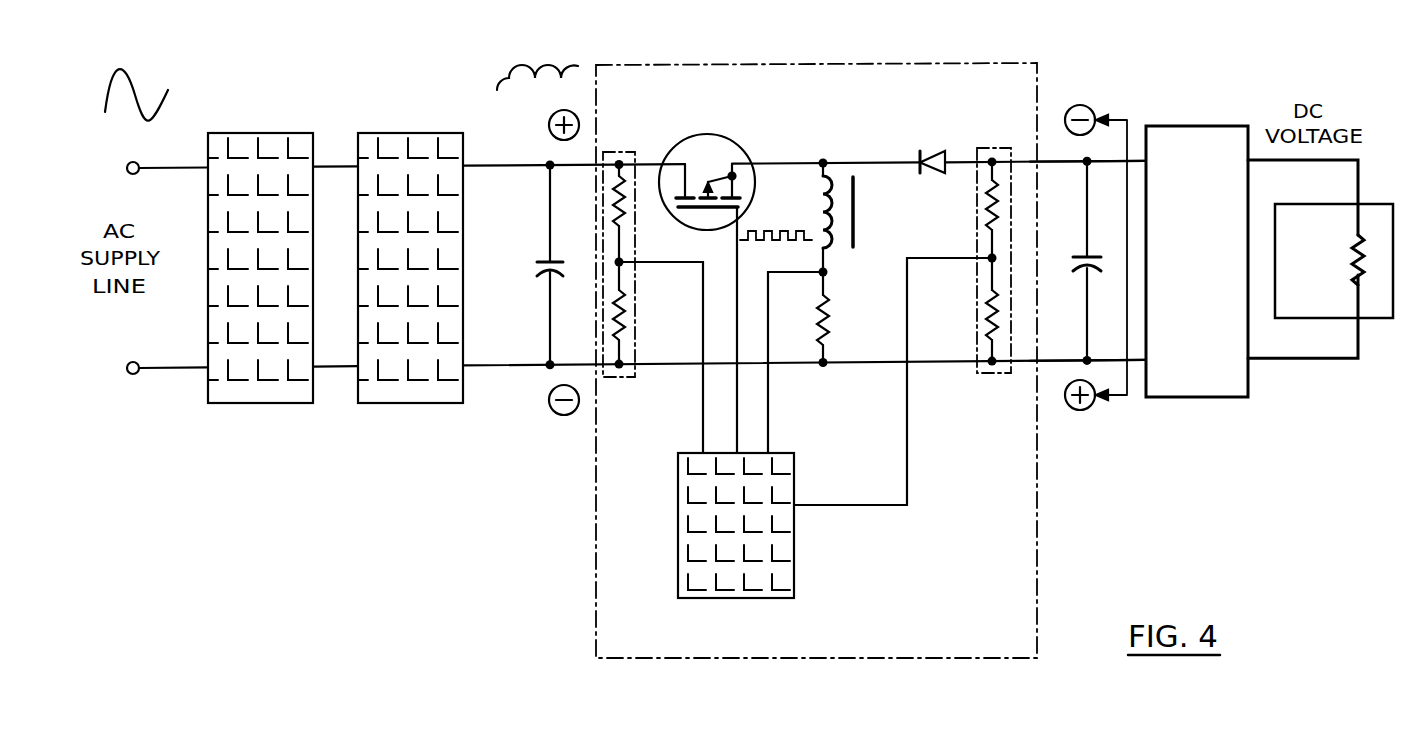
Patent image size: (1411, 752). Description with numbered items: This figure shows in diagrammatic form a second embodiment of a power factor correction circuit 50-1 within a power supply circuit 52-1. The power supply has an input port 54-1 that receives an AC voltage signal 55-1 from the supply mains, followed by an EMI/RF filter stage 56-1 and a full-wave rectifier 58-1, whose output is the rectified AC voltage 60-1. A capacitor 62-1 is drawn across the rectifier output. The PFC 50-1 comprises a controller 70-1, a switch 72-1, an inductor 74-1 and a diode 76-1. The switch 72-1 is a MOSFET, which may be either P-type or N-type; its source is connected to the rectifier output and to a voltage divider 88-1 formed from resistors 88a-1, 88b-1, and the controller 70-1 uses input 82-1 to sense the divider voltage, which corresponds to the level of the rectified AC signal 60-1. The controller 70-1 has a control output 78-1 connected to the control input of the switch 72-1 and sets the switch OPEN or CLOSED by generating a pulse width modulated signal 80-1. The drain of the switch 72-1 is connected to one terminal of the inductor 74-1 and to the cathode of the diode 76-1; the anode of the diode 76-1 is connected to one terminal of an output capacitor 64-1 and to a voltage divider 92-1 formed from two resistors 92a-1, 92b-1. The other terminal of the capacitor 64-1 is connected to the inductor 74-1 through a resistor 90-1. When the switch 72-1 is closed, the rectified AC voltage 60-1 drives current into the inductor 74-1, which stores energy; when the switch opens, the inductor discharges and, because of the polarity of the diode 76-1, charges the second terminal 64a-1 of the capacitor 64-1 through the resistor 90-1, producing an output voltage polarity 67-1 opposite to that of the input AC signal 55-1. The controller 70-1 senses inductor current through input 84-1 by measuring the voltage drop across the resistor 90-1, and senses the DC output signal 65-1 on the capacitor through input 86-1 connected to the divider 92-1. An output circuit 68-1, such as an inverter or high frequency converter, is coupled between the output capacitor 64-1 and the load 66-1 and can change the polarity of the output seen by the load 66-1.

The power factor correction circuit 50-1 is at (838, 63).
The power supply circuit 52-1 is at (458, 543).
The input port 54-1 is at (139, 177).
The AC voltage signal 55-1 is at (150, 100).
The EMI/RF filter stage 56-1 is at (275, 133).
The full-wave rectifier 58-1 is at (455, 152).
The rectified AC voltage 60-1 is at (540, 78).
The input capacitor 62-1 is at (547, 258).
The output capacitor 64-1 is at (1079, 273).
The second terminal of the capacitor 64a-1 is at (1068, 362).
The DC output signal 65-1 is at (1112, 216).
The load 66-1 is at (1318, 204).
The output voltage polarity 67-1 is at (1109, 257).
The output circuit 68-1 is at (1193, 126).
The controller 70-1 is at (780, 453).
The switch 72-1 is at (738, 138).
The inductor 74-1 is at (830, 172).
The diode 76-1 is at (936, 151).
The control output 78-1 is at (739, 272).
The pulse width modulated signal 80-1 is at (765, 232).
The input 82-1 is at (703, 405).
The input 84-1 is at (769, 393).
The input 86-1 is at (840, 505).
The voltage divider 88-1 is at (651, 233).
The resistor 88a-1 is at (621, 225).
The resistor 88b-1 is at (624, 312).
The resistor 90-1 is at (829, 313).
The voltage divider 92-1 is at (950, 229).
The resistor 92a-1 is at (986, 211).
The resistor 92b-1 is at (988, 315).